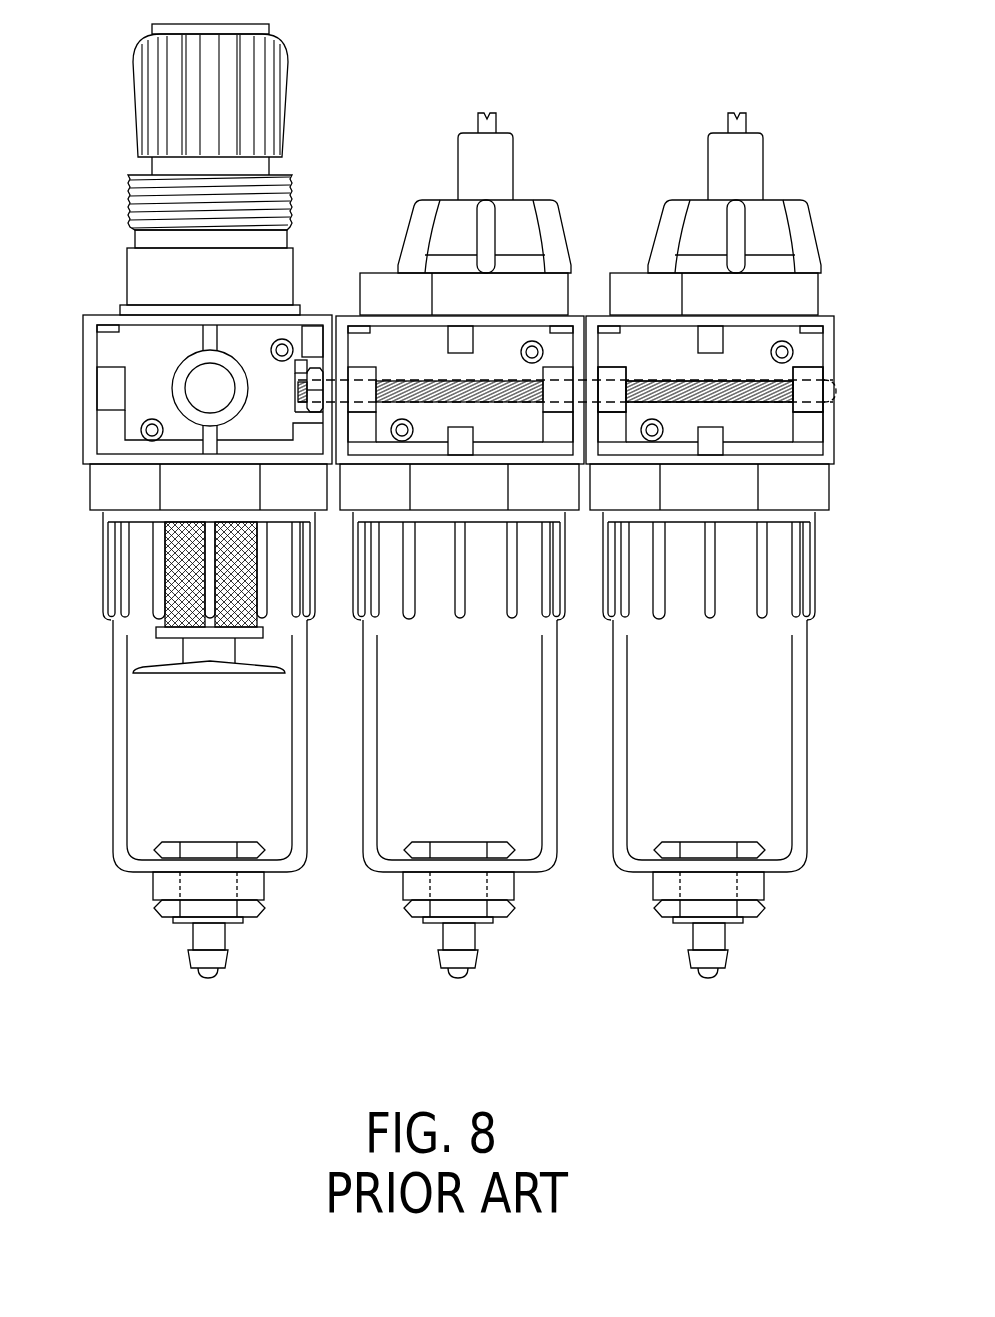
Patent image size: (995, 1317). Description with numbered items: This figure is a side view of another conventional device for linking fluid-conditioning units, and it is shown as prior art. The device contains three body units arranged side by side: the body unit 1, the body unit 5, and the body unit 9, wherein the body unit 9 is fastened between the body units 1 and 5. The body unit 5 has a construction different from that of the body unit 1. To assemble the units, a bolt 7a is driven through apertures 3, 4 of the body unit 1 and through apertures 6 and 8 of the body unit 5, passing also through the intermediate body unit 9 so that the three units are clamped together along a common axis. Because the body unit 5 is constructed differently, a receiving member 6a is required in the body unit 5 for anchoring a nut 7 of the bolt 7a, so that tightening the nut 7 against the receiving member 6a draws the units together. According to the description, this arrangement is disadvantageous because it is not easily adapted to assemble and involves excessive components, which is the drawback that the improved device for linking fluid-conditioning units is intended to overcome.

The body unit 1 is at (832, 320).
The aperture 3 is at (812, 375).
The aperture 4 is at (612, 378).
The body unit 5 is at (90, 318).
The aperture 6 is at (565, 391).
The receiving member 6a is at (306, 362).
The nut 7 is at (318, 378).
The bolt 7a is at (750, 390).
The aperture 8 is at (127, 390).
The body unit 9 is at (582, 318).